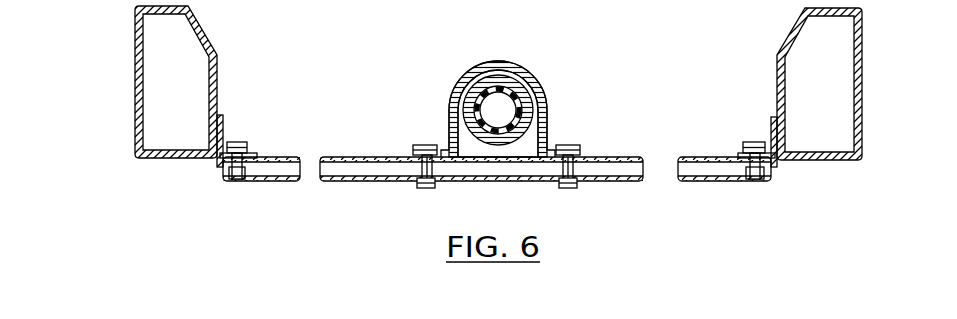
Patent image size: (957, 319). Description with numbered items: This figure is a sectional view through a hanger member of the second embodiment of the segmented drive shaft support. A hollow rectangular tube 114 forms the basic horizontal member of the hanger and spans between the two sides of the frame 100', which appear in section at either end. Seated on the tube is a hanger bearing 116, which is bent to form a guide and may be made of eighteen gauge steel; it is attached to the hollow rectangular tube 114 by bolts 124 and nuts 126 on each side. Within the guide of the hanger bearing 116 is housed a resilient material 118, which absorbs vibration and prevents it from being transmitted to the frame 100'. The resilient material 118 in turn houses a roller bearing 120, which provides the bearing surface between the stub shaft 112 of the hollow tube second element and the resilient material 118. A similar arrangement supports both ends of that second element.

The frame 100' is at (497, 92).
The stub shaft 112 is at (499, 100).
The hollow rectangular tube 114 is at (360, 182).
The hanger bearing 116 is at (545, 92).
The resilient material 118 is at (522, 150).
The roller bearing 120 is at (522, 92).
The bolts 124 is at (428, 146).
The nuts 126 is at (425, 189).